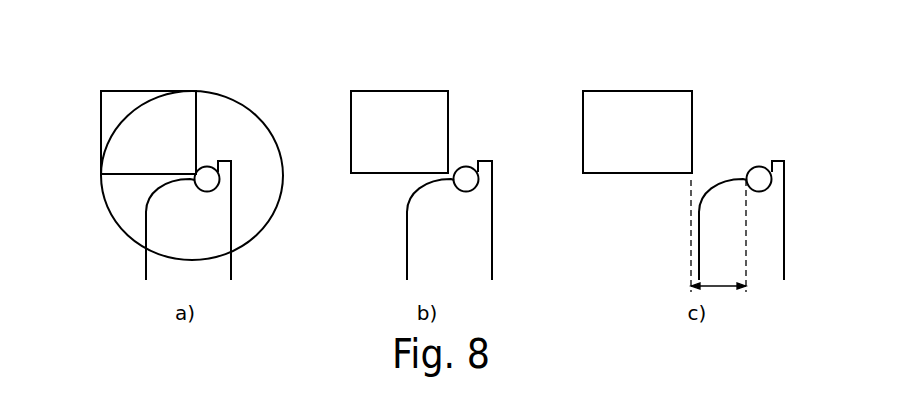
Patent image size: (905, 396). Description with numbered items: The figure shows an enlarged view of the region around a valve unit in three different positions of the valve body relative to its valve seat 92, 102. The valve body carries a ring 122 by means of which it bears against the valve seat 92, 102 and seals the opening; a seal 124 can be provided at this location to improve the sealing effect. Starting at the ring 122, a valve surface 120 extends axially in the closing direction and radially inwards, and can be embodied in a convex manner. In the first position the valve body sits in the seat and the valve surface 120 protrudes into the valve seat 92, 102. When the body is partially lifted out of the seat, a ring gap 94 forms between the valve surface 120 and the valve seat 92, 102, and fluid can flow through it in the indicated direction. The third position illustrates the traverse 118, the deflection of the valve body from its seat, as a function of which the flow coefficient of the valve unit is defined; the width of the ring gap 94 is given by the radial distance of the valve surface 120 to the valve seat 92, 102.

The first valve seat 92 is at (402, 139).
The second valve seat 102 is at (178, 105).
The seal 124 is at (207, 178).
The valve surface 120 is at (153, 188).
The ring 122 is at (225, 180).
The ring gap 94 is at (419, 181).
The traverse 118 is at (712, 278).